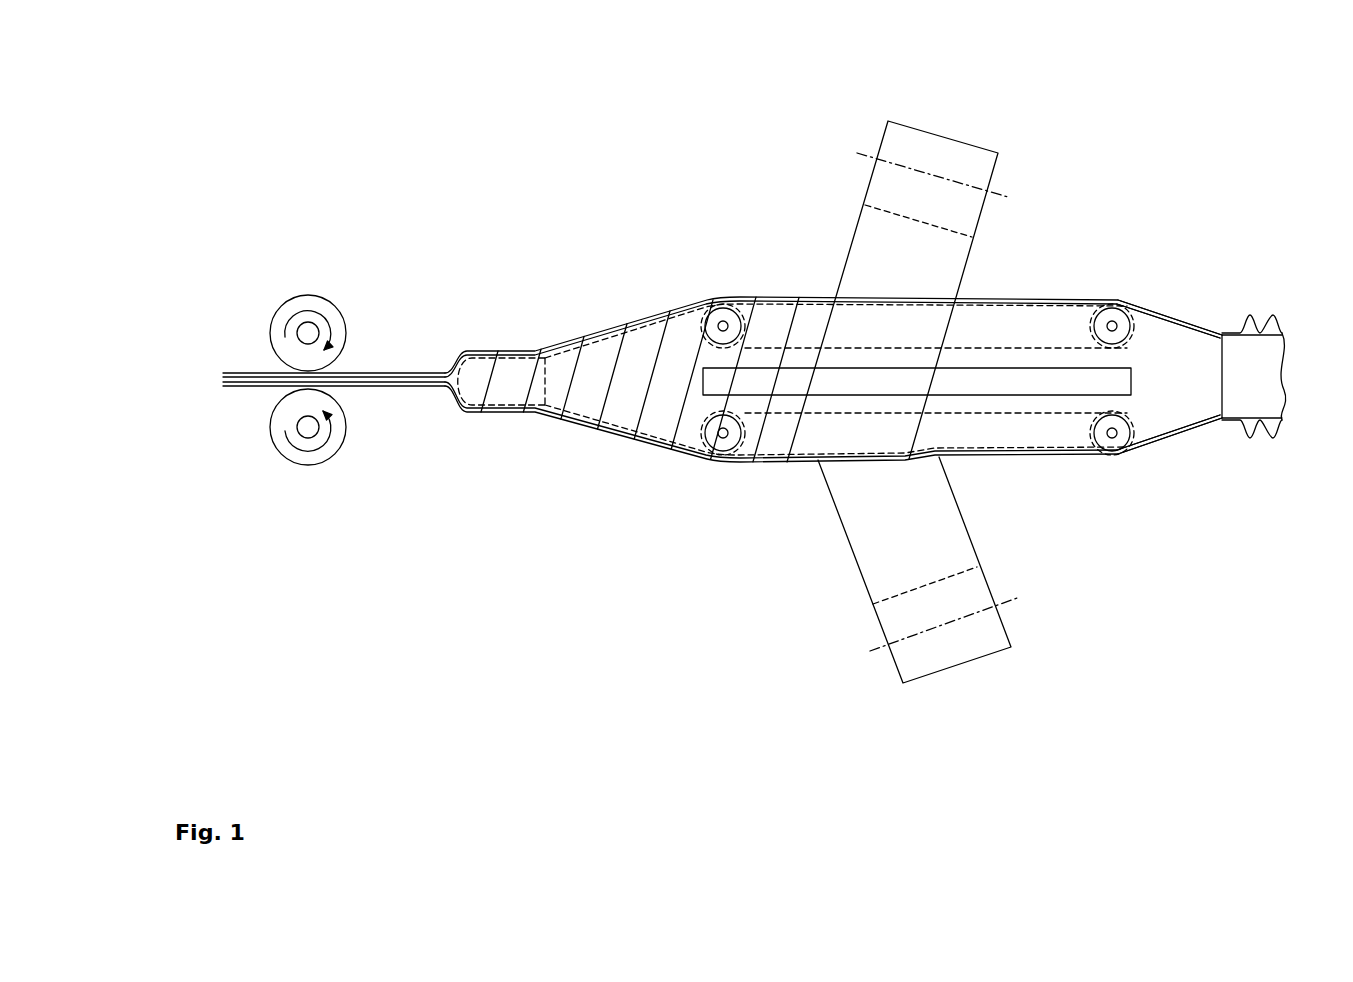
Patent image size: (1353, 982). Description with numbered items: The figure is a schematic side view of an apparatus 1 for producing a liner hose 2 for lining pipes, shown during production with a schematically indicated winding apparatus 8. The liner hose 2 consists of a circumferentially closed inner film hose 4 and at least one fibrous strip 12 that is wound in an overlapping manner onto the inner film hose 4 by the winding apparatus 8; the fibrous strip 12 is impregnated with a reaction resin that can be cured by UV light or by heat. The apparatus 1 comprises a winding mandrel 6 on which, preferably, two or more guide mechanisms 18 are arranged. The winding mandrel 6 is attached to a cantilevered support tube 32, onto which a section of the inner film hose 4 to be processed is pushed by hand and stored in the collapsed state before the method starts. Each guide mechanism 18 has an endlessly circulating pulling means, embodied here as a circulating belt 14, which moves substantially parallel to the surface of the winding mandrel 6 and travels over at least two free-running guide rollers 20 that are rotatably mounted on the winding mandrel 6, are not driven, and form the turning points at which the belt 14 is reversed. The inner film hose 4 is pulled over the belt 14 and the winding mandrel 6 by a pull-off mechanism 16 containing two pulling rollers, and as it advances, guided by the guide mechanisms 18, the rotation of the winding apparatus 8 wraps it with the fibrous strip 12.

The apparatus 1 is at (255, 147).
The liner hose 2 is at (220, 383).
The inner film hose 4 is at (1279, 312).
The winding mandrel 6 is at (1177, 397).
The winding apparatus 8 is at (872, 134).
The fibrous strip 12 is at (870, 248).
The circulating belt 14 is at (1067, 305).
The pull-off mechanism 16 is at (308, 464).
The guide mechanism 18 is at (1011, 293).
The guide rollers 20 is at (712, 310).
The support tube 32 is at (1265, 396).